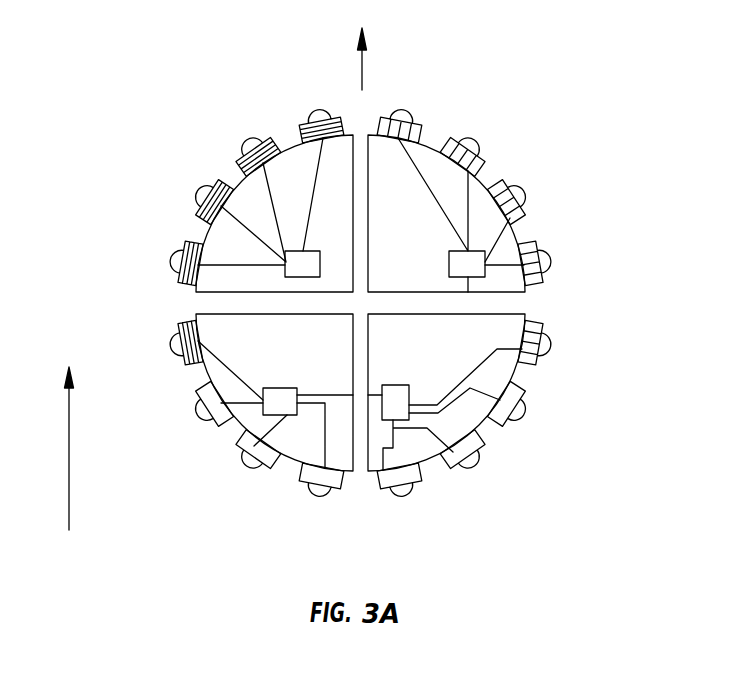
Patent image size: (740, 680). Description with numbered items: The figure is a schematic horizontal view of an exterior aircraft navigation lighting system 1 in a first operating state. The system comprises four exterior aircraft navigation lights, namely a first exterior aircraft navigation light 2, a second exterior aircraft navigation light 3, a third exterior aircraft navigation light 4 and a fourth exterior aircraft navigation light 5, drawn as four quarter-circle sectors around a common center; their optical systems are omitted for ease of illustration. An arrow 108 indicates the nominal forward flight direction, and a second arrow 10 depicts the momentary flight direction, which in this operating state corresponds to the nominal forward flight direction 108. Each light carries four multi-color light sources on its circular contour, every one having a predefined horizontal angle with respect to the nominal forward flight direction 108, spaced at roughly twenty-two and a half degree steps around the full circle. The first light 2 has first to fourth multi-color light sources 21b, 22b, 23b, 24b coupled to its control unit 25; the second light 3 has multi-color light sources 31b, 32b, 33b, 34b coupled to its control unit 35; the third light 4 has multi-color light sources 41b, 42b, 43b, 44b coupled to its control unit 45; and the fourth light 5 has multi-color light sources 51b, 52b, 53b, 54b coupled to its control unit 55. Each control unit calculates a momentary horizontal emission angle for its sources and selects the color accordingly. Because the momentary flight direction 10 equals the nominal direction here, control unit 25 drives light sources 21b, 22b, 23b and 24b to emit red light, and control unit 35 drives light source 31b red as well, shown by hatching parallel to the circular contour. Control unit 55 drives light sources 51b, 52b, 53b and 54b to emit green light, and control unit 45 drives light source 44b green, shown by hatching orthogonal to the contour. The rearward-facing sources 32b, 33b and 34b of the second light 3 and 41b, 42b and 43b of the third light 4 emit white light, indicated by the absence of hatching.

The exterior aircraft navigation lighting system 1 is at (556, 92).
The nominal forward flight direction 108 is at (362, 70).
The momentary flight direction 10 is at (69, 440).
The first exterior aircraft navigation light 2 is at (300, 190).
The second exterior aircraft navigation light 3 is at (263, 351).
The third exterior aircraft navigation light 4 is at (400, 349).
The fourth exterior aircraft navigation light 5 is at (400, 244).
The control unit 25 is at (310, 251).
The control unit 35 is at (281, 388).
The control unit 45 is at (396, 385).
The control unit 55 is at (449, 262).
The first multi-color light source 21b is at (318, 110).
The second multi-color light source 22b is at (248, 141).
The third multi-color light source 23b is at (200, 191).
The fourth multi-color light source 24b is at (171, 262).
The first multi-color light source 31b is at (171, 346).
The second multi-color light source 32b is at (199, 414).
The third multi-color light source 33b is at (247, 464).
The fourth multi-color light source 34b is at (318, 495).
The first multi-color light source 41b is at (403, 495).
The second multi-color light source 42b is at (474, 465).
The third multi-color light source 43b is at (522, 415).
The fourth multi-color light source 44b is at (550, 346).
The first multi-color light source 51b is at (550, 262).
The second multi-color light source 52b is at (523, 192).
The third multi-color light source 53b is at (473, 141).
The fourth multi-color light source 54b is at (403, 111).